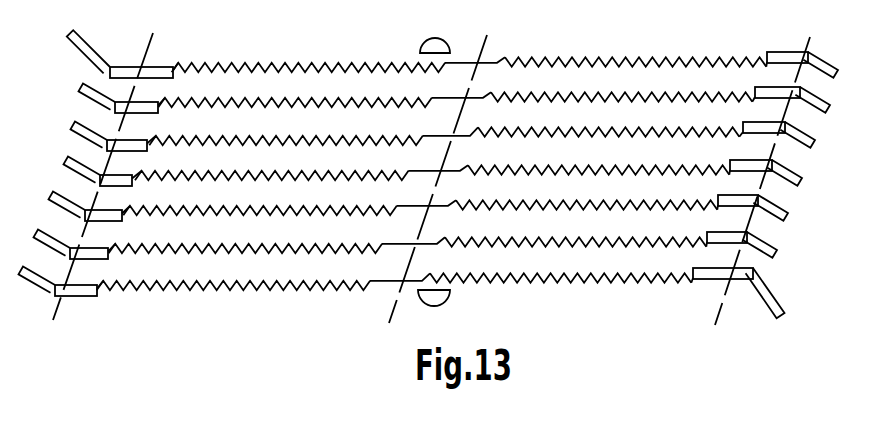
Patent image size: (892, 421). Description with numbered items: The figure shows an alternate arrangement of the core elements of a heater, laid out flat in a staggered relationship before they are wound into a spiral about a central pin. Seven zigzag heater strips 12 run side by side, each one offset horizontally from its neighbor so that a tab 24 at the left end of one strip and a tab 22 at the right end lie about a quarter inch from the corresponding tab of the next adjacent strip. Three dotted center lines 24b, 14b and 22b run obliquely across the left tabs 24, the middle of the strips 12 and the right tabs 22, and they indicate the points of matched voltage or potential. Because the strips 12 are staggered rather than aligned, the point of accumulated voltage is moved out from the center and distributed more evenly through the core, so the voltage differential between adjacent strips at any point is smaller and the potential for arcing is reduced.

The strip 12 is at (567, 58).
The tab 22 is at (809, 148).
The tab 24 is at (51, 196).
The center line 14b is at (417, 191).
The center line 22b is at (743, 194).
The center line 24b is at (93, 190).